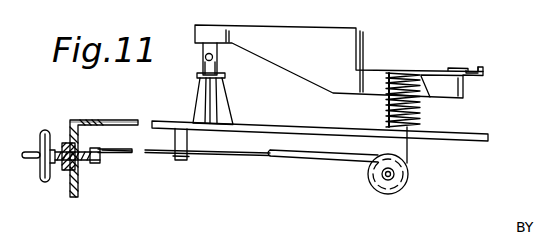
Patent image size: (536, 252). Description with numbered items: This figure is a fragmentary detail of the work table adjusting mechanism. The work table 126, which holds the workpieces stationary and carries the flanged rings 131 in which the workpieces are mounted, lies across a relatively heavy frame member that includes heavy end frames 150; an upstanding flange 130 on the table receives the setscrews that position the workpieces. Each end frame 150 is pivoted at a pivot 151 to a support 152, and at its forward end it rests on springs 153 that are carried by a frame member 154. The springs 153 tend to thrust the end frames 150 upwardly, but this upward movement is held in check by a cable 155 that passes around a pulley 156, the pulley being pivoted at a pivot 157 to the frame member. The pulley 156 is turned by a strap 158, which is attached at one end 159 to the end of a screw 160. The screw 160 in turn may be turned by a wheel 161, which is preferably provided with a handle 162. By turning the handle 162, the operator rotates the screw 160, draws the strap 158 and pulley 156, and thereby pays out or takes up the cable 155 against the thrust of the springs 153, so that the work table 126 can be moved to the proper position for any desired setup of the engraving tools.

The work table 126 is at (470, 70).
The upstanding flange 130 is at (483, 70).
The flanged rings 131 is at (457, 68).
The end frames 150 is at (339, 61).
The pivot 151 is at (200, 58).
The supports 152 is at (219, 84).
The springs 153 is at (420, 108).
The frame member 154 is at (320, 118).
The cable 155 is at (408, 150).
The pulley 156 is at (409, 180).
The pulley pivot 157 is at (380, 180).
The strap 158 is at (290, 160).
The strap end 159 is at (100, 156).
The screw 160 is at (80, 164).
The wheel 161 is at (43, 129).
The handle 162 is at (38, 162).